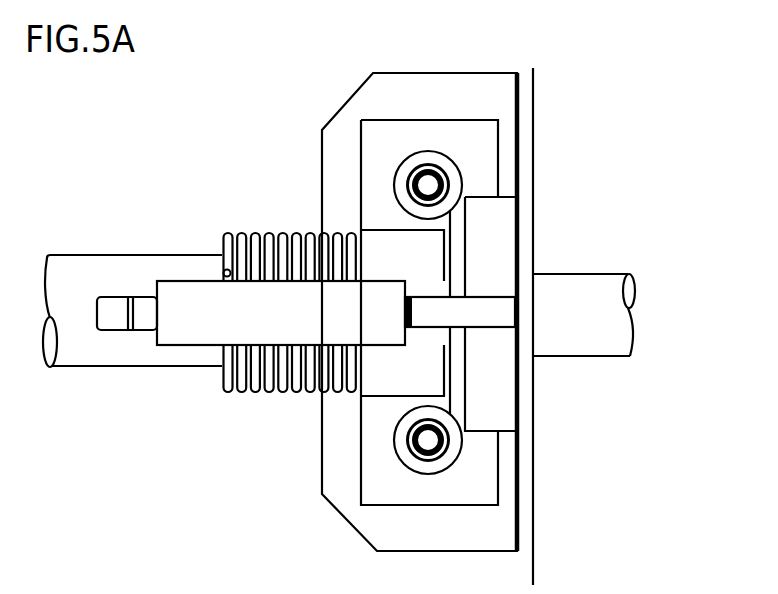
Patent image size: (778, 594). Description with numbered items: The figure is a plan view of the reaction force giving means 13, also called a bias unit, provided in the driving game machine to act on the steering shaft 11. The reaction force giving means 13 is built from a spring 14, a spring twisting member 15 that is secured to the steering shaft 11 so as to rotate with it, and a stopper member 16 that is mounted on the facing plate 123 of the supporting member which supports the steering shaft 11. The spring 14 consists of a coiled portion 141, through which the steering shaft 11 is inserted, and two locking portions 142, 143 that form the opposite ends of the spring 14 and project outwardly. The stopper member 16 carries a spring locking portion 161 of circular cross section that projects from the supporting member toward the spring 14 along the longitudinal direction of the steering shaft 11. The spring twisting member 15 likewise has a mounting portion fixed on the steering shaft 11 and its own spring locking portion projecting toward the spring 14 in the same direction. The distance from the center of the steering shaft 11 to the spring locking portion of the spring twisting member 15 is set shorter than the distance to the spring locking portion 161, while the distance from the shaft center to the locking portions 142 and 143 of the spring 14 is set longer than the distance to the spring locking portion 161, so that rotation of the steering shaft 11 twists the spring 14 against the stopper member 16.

The steering shaft 11 is at (80, 253).
The reaction force giving means 13 is at (216, 433).
The spring 14 is at (227, 233).
The coiled portion 141 is at (278, 233).
The locking portion 142 is at (223, 270).
The locking portion 143 is at (320, 390).
The spring twisting member 15 is at (387, 408).
The stopper member 16 is at (495, 312).
The spring locking portion 161 is at (173, 347).
The facing plate 123 is at (533, 147).